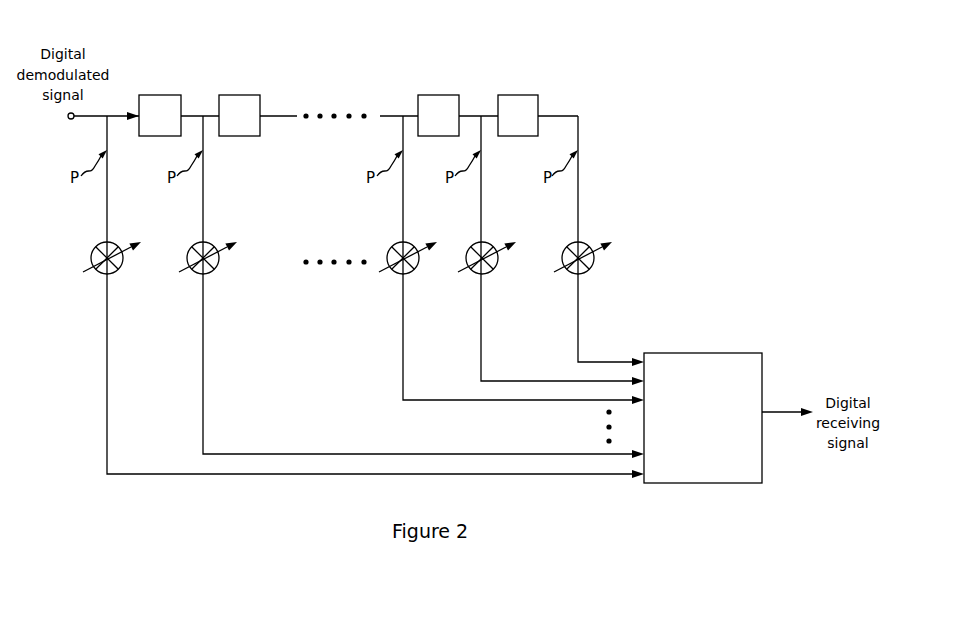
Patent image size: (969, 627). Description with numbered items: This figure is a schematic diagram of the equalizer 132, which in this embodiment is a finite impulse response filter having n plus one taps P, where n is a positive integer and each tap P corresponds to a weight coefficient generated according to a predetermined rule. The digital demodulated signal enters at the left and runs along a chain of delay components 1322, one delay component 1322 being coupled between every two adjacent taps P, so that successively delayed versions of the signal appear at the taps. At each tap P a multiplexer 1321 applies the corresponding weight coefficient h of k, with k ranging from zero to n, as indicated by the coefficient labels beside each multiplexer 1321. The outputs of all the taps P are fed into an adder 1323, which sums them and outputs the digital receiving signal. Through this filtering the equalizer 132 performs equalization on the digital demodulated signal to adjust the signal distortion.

The equalizer 132 is at (112, 506).
The multiplexer 1321 is at (113, 244).
The delay component 1322 is at (162, 95).
The adder 1323 is at (717, 353).